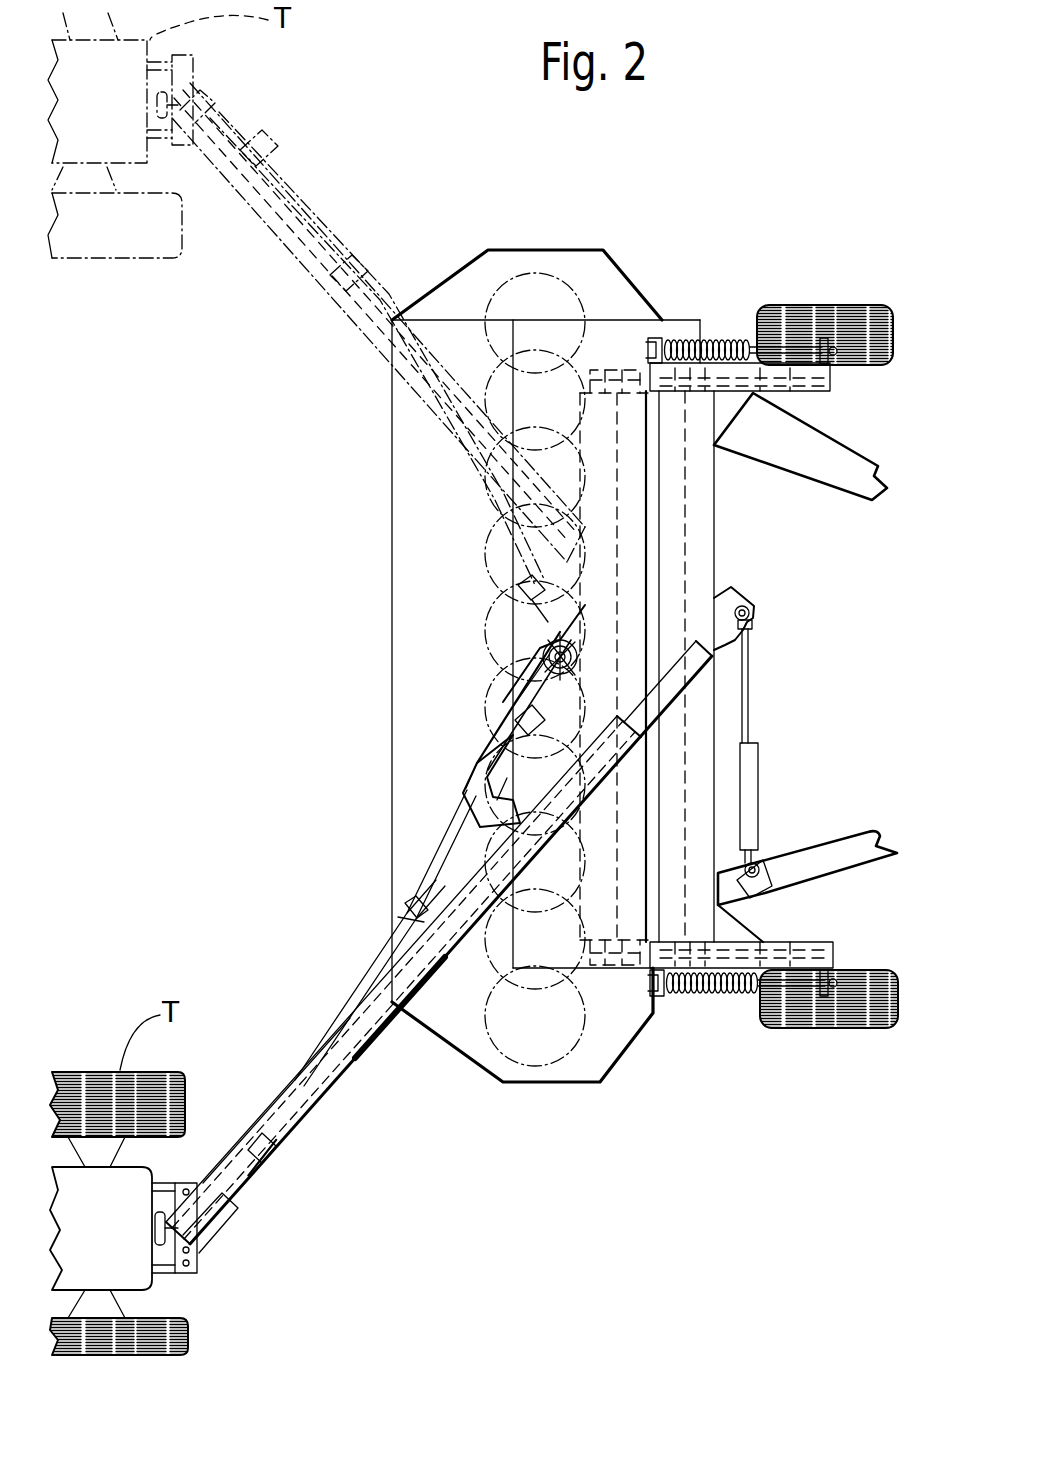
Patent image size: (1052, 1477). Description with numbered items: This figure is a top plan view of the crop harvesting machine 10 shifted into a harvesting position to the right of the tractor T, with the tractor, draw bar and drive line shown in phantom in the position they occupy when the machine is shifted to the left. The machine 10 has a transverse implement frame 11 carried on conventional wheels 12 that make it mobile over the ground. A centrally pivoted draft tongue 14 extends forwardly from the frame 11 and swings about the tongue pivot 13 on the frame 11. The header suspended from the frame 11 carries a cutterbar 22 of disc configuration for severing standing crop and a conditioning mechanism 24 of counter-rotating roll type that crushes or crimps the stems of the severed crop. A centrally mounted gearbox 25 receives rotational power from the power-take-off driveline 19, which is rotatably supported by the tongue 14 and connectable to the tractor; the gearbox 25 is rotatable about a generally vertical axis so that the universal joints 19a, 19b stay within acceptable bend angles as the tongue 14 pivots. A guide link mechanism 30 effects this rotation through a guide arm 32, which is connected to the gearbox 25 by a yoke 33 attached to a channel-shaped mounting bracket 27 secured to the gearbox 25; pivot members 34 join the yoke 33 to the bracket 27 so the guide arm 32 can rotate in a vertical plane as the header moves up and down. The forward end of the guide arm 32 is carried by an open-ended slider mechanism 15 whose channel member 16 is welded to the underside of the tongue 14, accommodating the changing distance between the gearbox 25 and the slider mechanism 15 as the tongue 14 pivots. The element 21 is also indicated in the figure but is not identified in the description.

The crop harvesting machine 10 is at (705, 155).
The transverse implement frame 11 is at (722, 557).
The wheels 12 is at (812, 305).
The tongue pivot 13 is at (720, 662).
The draft tongue 14 is at (330, 205).
The slider mechanism 15 is at (388, 1063).
The channel member 16 is at (380, 1020).
The power-take-off driveline 19 is at (400, 440).
The universal joint 19a is at (528, 728).
The universal joint 19b is at (270, 1160).
The header 21 is at (708, 298).
The cutterbar 22 is at (535, 262).
The conditioning mechanism 24 is at (690, 530).
The gearbox 25 is at (500, 645).
The mounting bracket 27 is at (500, 710).
The guide link mechanism 30 is at (435, 518).
The guide arm 32 is at (445, 912).
The yoke 33 is at (465, 800).
The pivot members 34 is at (475, 760).